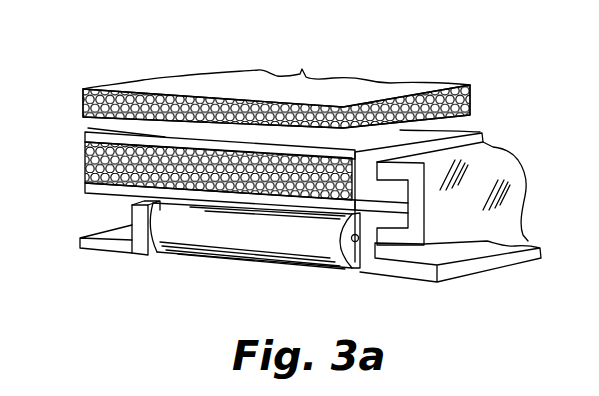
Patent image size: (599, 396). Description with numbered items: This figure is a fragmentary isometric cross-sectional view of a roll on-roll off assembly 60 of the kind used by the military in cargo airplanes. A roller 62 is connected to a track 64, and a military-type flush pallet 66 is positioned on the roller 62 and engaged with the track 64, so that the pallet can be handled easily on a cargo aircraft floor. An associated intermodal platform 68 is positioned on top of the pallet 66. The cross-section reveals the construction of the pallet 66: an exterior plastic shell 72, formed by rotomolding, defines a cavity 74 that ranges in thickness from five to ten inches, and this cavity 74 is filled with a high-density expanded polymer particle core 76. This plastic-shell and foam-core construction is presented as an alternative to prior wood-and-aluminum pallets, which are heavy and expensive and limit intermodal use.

The roll on-roll off assembly 60 is at (299, 175).
The roller 62 is at (253, 266).
The track 64 is at (483, 275).
The 463-L-type pallet 66 is at (118, 190).
The associated intermodal platform 68 is at (300, 72).
The exterior plastic shell 72 is at (128, 143).
The cavity 74 is at (230, 180).
The high-density expanded polymer particle core 76 is at (112, 168).